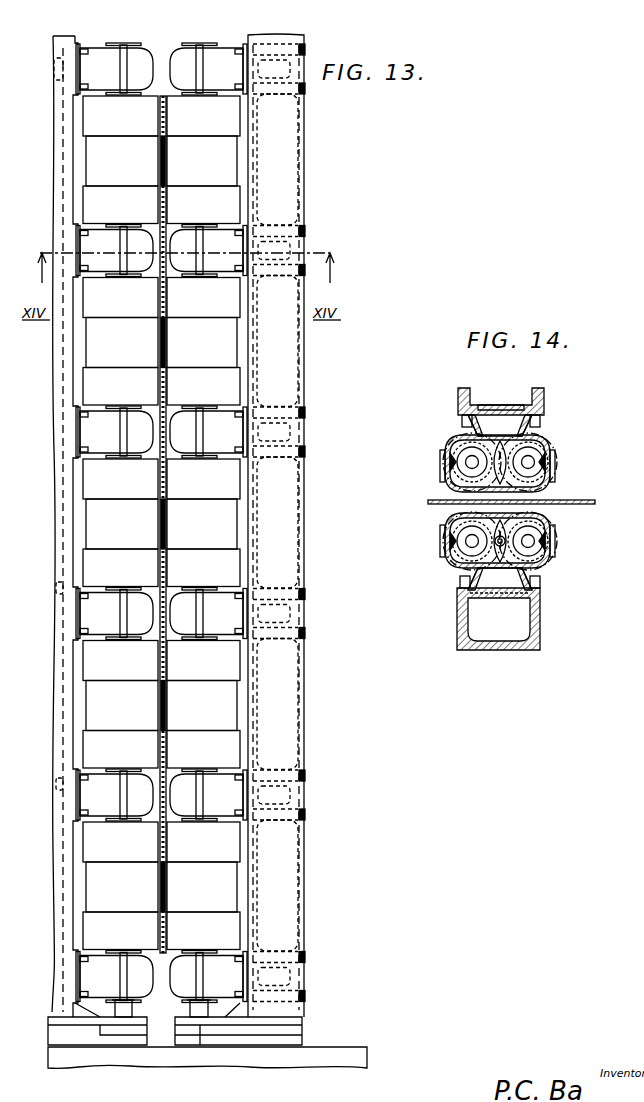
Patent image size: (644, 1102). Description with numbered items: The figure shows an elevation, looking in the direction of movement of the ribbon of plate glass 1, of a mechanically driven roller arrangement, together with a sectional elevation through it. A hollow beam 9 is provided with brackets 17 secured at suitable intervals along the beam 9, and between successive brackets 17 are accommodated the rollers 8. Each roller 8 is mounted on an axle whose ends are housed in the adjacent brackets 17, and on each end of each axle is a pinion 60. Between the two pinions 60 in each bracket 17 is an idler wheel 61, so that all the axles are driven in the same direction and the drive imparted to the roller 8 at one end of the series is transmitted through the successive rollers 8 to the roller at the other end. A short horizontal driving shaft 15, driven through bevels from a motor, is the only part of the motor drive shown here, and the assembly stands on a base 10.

In FIG. 13, the ribbon of plate glass 1 is at (167, 835).
In FIG. 14, the ribbon of plate glass 1 is at (440, 500).
In FIG. 13, the roller 8 is at (136, 881).
In FIG. 13, the hollow beam 9 is at (62, 705).
In FIG. 14, the hollow beam 9 is at (542, 406).
In FIG. 13, the base 10 is at (302, 1052).
In FIG. 13, the short horizontal driving shaft 15 is at (190, 1010).
In FIG. 13, the bracket 17 is at (189, 975).
In FIG. 14, the bracket 17 is at (546, 565).
In FIG. 14, the pinion 60 is at (540, 541).
In FIG. 14, the idler wheel 61 is at (500, 548).